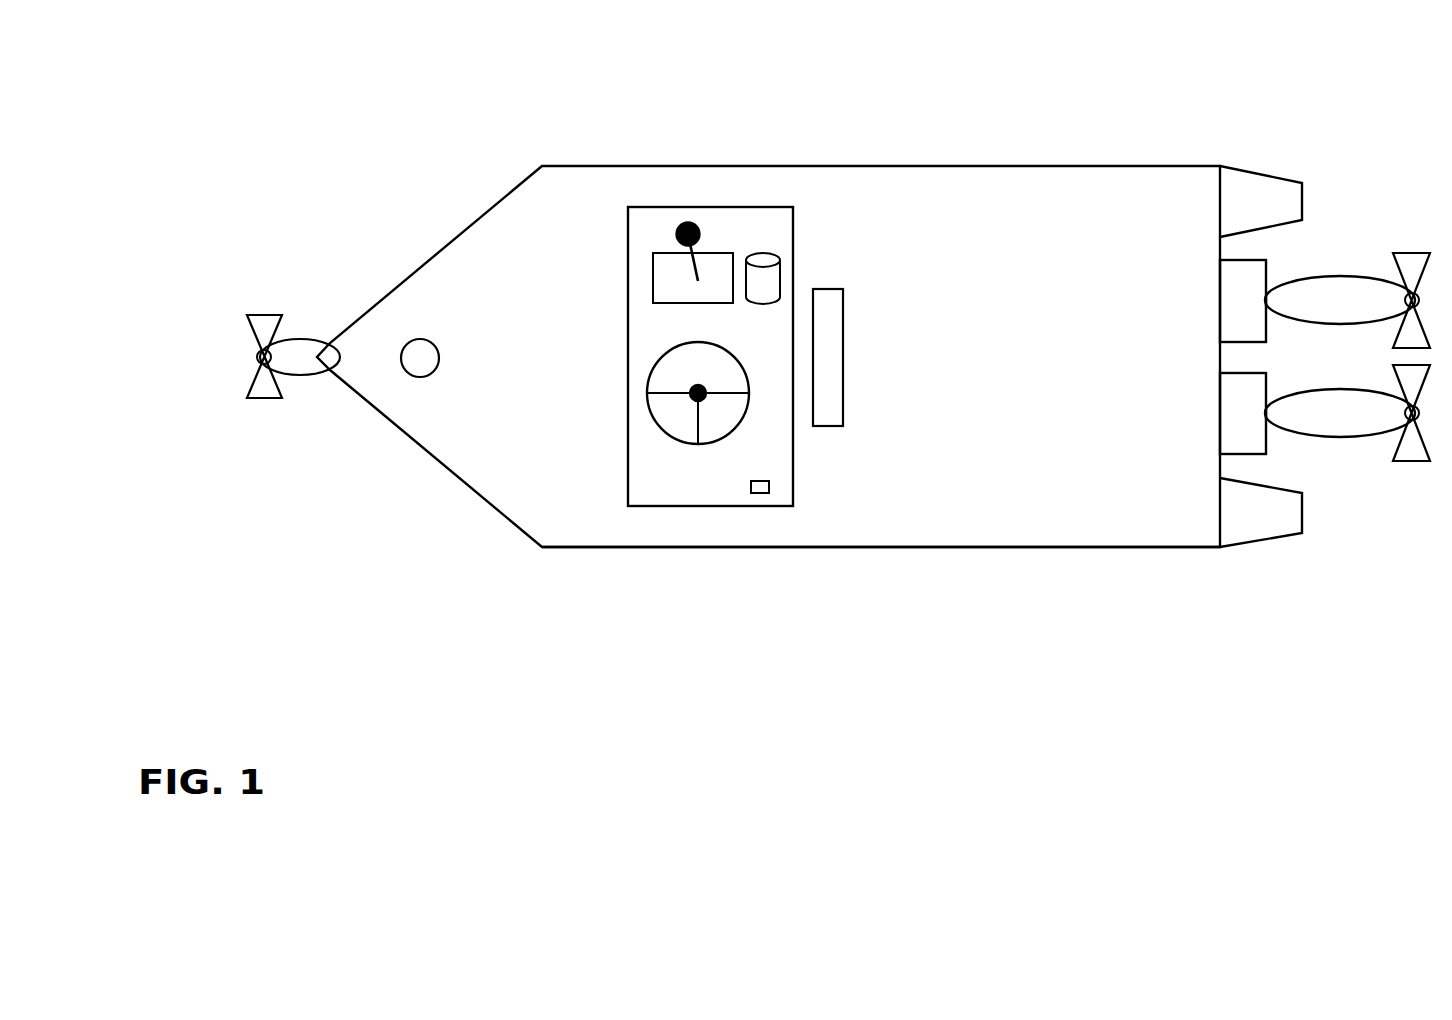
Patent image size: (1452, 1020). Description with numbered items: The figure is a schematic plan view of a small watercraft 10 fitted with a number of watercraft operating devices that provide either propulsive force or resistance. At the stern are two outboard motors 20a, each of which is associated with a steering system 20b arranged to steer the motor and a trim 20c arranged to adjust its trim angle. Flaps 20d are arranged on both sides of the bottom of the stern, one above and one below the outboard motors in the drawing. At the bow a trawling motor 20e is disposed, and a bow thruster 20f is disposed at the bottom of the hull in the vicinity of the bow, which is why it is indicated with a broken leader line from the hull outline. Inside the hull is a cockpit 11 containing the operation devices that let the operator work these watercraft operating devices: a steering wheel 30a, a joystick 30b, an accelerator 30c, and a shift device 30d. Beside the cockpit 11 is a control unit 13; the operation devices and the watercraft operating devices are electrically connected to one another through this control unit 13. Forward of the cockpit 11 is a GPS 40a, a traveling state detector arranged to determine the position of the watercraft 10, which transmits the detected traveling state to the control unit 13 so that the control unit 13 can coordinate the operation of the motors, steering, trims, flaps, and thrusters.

The watercraft 10 is at (998, 153).
The cockpit 11 is at (675, 207).
The control unit 13 is at (823, 289).
The outboard motor 20a is at (1348, 278).
The steering system 20b is at (1265, 302).
The trim 20c is at (1218, 322).
The flap 20d is at (1262, 175).
The trawling motor 20e is at (300, 338).
The bow thruster 20f is at (646, 548).
The steering wheel 30a is at (657, 377).
The joystick 30b is at (677, 234).
The accelerator 30c is at (760, 253).
The shift device 30d is at (758, 493).
The GPS 40a is at (420, 380).